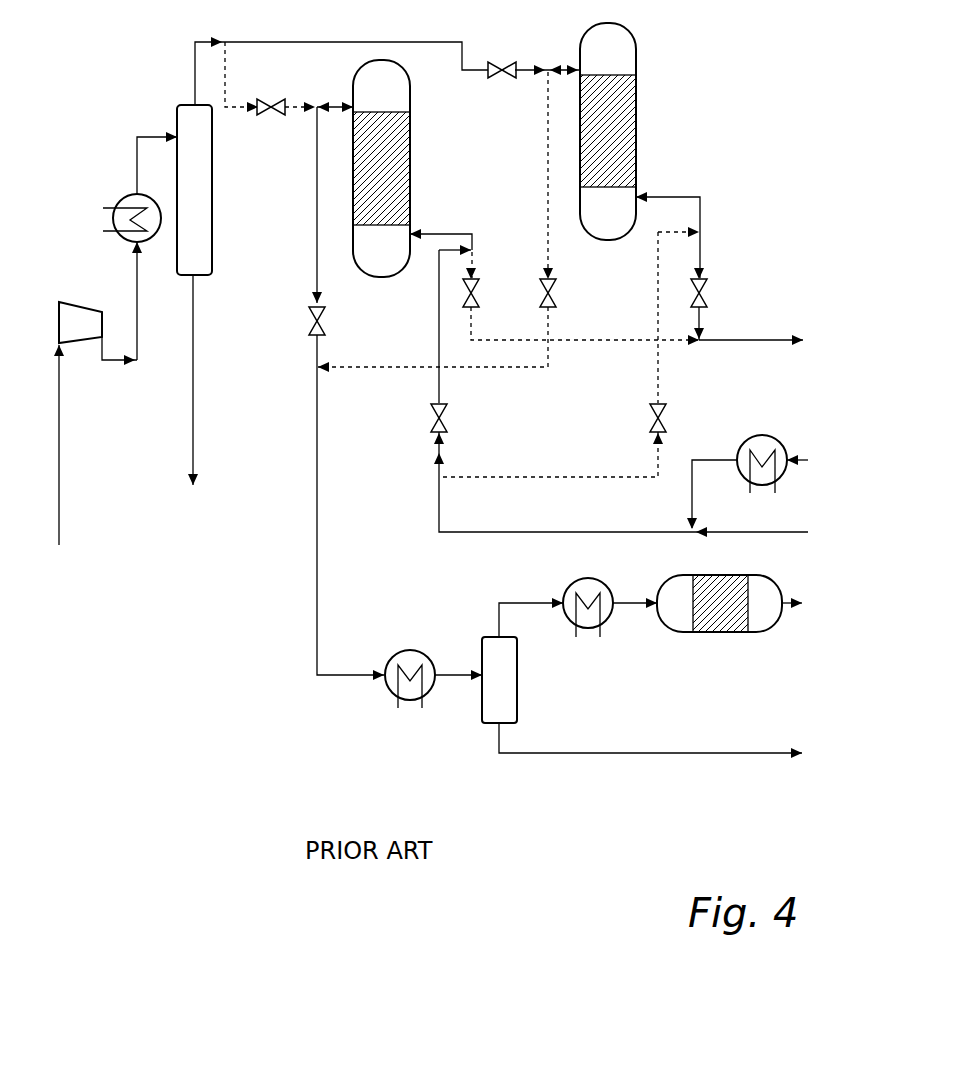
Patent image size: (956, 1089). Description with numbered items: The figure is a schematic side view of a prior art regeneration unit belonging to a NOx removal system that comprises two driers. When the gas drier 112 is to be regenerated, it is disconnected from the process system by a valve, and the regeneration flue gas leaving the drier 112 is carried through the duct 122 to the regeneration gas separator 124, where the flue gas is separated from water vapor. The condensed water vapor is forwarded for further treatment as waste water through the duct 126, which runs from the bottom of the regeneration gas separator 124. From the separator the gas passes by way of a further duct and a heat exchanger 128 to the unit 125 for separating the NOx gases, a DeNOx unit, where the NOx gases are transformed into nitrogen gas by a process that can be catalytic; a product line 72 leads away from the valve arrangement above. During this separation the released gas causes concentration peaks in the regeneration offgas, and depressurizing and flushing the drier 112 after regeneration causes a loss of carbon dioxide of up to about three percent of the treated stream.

The product outlet line 72 is at (753, 338).
The gas drier 112 is at (411, 146).
The duct 122 is at (317, 518).
The regeneration gas separator 124 is at (482, 710).
The unit for separating the NOx gases 125 is at (720, 634).
The duct 126 is at (634, 755).
The heat exchanger 128 is at (627, 607).